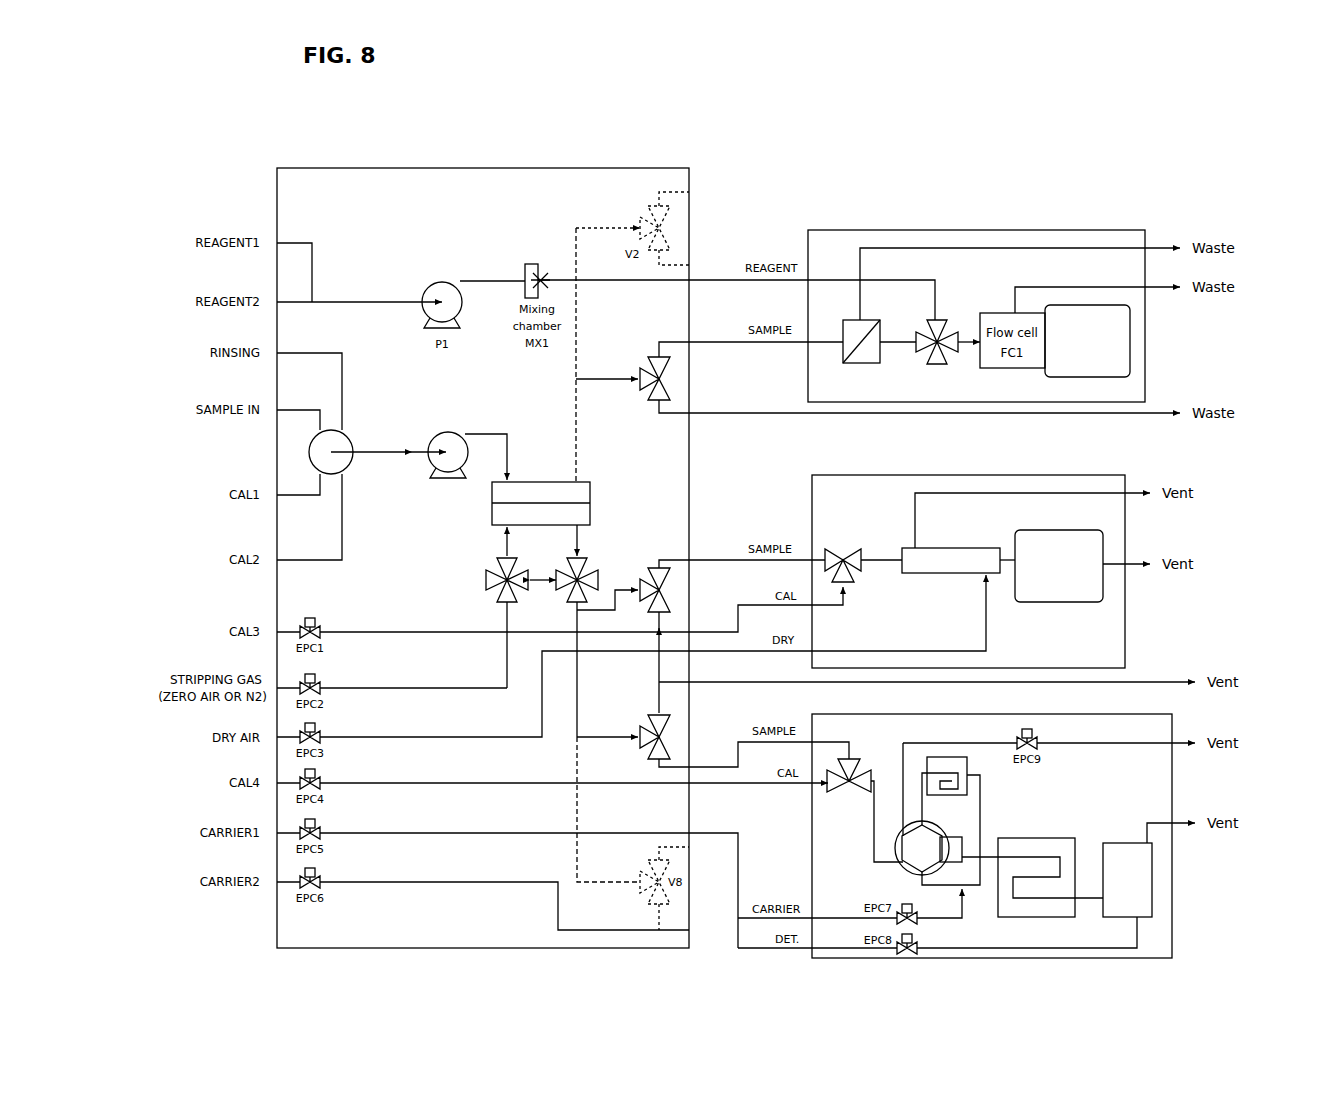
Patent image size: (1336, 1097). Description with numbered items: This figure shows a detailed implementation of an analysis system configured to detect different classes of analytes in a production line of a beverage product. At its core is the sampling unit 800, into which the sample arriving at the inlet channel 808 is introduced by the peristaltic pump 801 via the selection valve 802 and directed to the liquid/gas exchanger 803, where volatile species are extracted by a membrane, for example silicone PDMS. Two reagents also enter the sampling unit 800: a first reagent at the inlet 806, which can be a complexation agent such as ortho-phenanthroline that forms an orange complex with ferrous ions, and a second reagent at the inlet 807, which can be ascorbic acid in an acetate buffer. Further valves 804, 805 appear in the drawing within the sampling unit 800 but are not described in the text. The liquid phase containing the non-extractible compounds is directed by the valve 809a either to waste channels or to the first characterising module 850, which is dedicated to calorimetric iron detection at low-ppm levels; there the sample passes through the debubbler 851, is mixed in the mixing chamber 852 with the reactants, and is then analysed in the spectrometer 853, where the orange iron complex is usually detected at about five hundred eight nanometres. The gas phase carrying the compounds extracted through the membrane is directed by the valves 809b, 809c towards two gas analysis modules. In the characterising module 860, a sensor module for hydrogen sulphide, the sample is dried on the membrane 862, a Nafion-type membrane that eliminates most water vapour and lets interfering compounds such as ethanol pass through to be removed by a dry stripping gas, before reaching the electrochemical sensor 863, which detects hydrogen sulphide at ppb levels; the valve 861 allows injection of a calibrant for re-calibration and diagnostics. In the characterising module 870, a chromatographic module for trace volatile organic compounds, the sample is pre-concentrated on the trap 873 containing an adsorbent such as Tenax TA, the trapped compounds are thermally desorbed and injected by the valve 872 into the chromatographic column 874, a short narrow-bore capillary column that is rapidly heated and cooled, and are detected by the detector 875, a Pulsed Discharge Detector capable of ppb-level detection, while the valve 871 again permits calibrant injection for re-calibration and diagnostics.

The sampling unit 800 is at (600, 166).
The peristaltic pump 801 is at (460, 428).
The selection valve 802 is at (356, 433).
The liquid/gas exchanger 803 is at (594, 497).
The valve 804 is at (592, 576).
The valve 805 is at (495, 578).
The first reagent inlet 806 is at (282, 240).
The second reagent inlet 807 is at (282, 306).
The inlet channel 808 is at (274, 412).
The valve 809a is at (650, 366).
The valve 809b is at (648, 573).
The valve 809c is at (654, 720).
The first characterising module 850 is at (1130, 225).
The debubbler 851 is at (838, 356).
The mixing chamber 852 is at (932, 363).
The spectrometer 853 is at (1042, 376).
The characterising module 860 is at (1132, 473).
The valve 861 is at (850, 550).
The membrane 862 is at (953, 546).
The sensor 863 is at (1110, 551).
The characterising module 870 is at (1150, 711).
The valve 871 is at (862, 770).
The valve 872 is at (899, 877).
The trap 873 is at (971, 774).
The chromatographic column 874 is at (1050, 836).
The detector 875 is at (1125, 841).